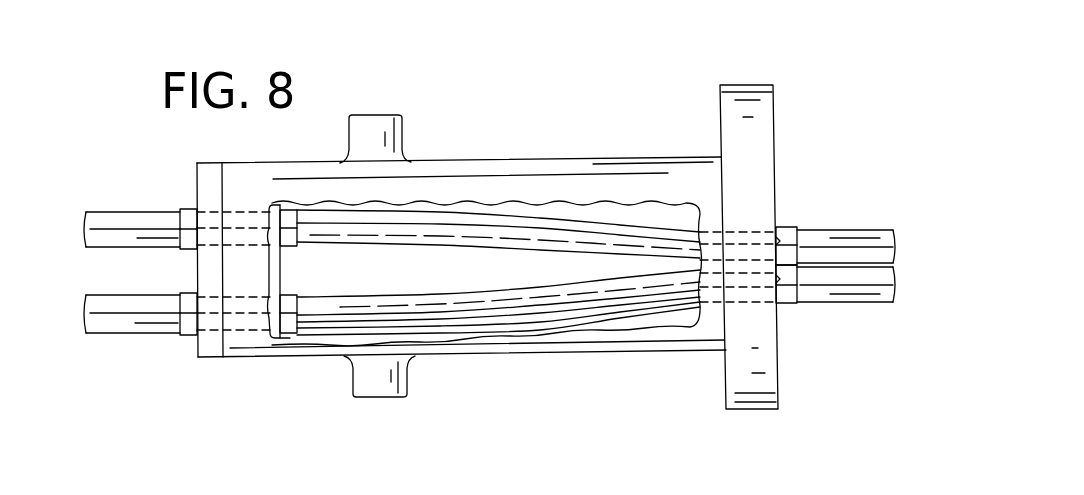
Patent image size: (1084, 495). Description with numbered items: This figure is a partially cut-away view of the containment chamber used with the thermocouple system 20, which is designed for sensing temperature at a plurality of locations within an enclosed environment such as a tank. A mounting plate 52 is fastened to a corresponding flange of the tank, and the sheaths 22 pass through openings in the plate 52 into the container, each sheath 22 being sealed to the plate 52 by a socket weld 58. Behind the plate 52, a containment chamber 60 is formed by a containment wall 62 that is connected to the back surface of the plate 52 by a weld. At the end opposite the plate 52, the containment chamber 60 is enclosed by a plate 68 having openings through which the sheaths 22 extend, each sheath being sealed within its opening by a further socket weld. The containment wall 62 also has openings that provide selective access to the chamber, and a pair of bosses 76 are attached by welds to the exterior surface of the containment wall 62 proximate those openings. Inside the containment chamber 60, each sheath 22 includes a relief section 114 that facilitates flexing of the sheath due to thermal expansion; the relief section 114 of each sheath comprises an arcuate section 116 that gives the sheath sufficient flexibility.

The thermocouple system 20 is at (694, 56).
The sheath 22 is at (832, 233).
The plate 52 is at (735, 383).
The socket weld 58 is at (786, 232).
The containment chamber 60 is at (648, 212).
The containment wall 62 is at (545, 176).
The plate 68 is at (213, 347).
The bosses 76 is at (372, 140).
The relief section 114 is at (569, 214).
The arcuate section 116 is at (382, 243).